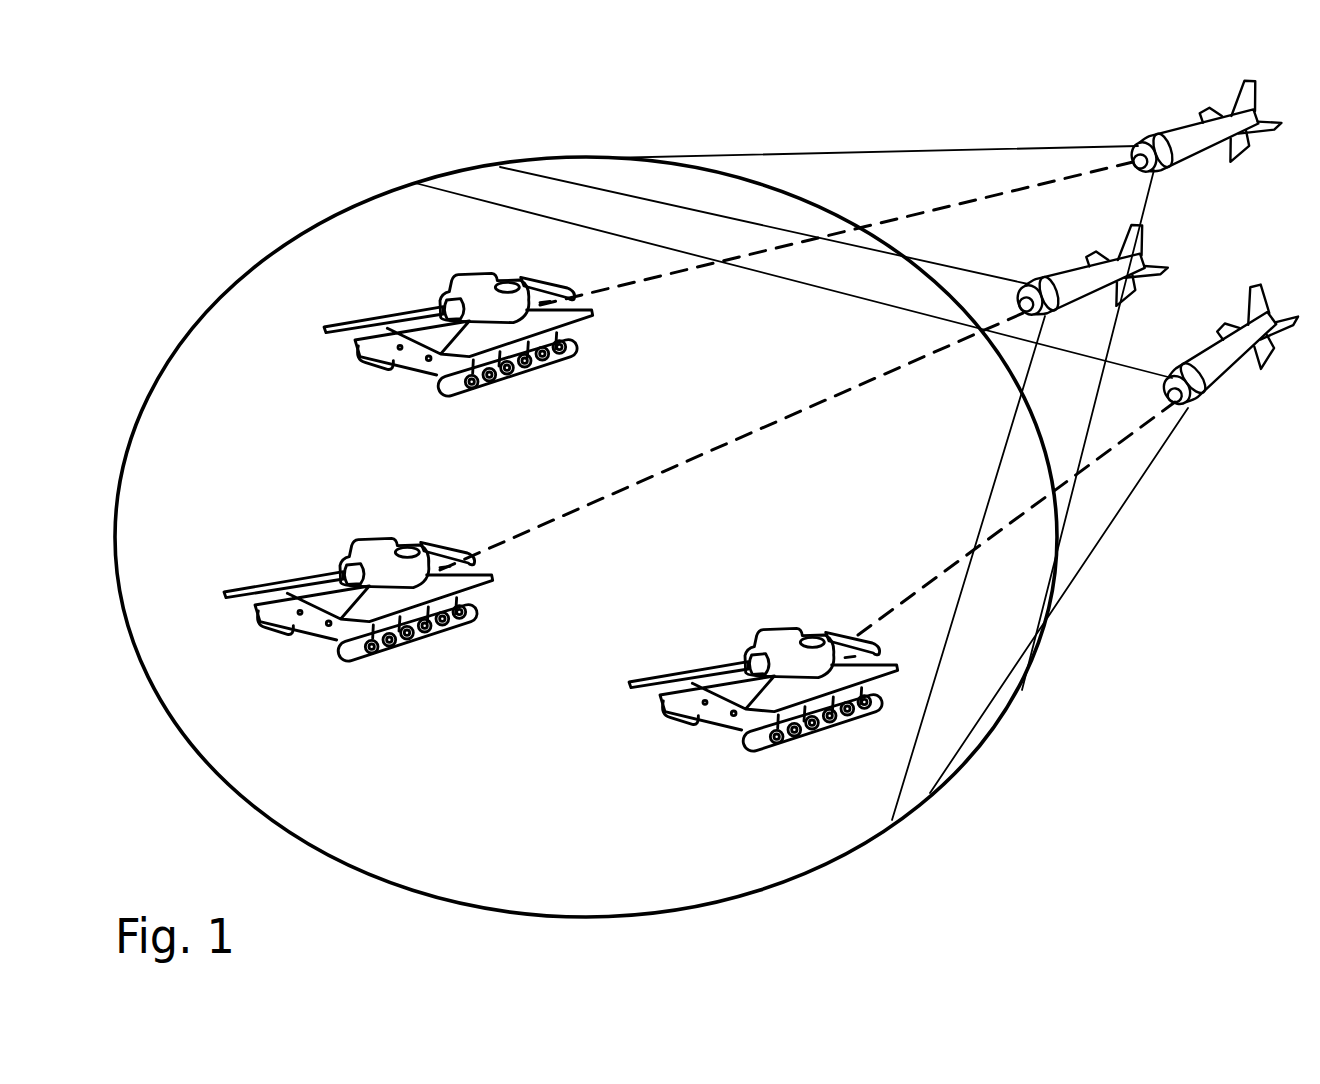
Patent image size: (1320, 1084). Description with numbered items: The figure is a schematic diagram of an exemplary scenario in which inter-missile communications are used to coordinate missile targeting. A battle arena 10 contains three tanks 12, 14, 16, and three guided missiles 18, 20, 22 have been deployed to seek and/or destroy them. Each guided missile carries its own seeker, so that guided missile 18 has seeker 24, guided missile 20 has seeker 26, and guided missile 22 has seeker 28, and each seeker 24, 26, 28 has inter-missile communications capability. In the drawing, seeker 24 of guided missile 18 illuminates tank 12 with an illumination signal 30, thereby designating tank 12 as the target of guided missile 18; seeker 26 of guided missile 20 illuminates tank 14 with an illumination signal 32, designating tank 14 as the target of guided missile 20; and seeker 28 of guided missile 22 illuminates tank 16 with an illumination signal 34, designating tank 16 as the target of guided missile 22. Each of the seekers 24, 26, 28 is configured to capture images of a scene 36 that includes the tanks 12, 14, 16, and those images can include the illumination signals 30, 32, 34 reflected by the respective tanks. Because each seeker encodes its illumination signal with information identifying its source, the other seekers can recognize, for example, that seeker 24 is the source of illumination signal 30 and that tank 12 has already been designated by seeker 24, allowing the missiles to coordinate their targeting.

The battle arena 10 is at (194, 162).
The tank 12 is at (444, 263).
The tank 14 is at (355, 529).
The tank 16 is at (761, 619).
The guided missile 18 is at (1169, 113).
The guided missile 20 is at (1085, 258).
The guided missile 22 is at (1232, 377).
The seeker 24 is at (1142, 149).
The seeker 26 is at (1033, 290).
The seeker 28 is at (1194, 404).
The illumination signal 30 is at (627, 284).
The illumination signal 32 is at (727, 445).
The illumination signal 34 is at (925, 588).
The scene 36 is at (189, 331).